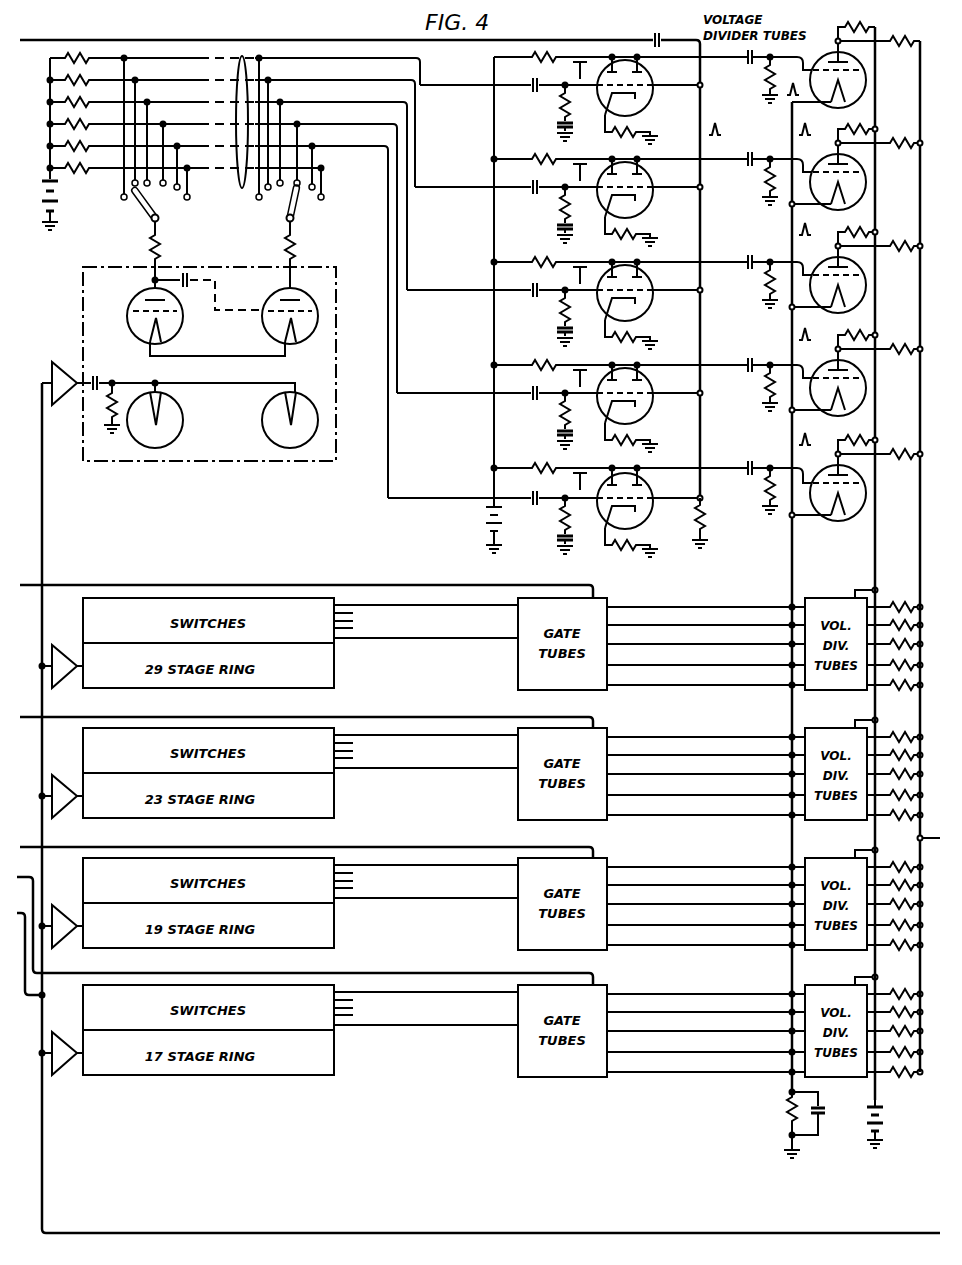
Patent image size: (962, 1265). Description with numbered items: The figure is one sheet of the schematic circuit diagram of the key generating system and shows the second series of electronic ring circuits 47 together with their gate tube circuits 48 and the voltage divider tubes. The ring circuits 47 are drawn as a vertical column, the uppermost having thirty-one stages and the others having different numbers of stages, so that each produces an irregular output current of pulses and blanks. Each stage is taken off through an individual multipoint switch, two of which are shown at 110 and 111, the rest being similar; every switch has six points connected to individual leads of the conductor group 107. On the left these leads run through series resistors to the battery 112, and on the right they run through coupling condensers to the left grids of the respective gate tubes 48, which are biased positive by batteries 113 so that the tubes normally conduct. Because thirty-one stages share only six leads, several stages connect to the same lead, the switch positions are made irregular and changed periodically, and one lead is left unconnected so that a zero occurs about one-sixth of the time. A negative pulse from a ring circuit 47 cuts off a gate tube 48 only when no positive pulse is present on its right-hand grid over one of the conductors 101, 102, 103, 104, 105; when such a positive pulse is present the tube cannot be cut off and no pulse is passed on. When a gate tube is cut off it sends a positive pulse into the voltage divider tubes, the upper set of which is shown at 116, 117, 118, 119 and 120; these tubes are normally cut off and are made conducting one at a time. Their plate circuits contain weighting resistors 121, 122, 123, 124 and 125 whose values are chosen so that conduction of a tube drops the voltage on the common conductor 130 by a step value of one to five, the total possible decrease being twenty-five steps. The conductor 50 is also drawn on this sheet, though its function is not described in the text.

The ring circuits 47 is at (212, 463).
The gate tube circuits 48 is at (751, 315).
The common return line 50 is at (412, 1232).
The conductor 101 is at (588, 40).
The conductor 102 is at (166, 584).
The conductor 103 is at (166, 716).
The conductor 104 is at (166, 846).
The conductor 105 is at (166, 972).
The conductor group 107 is at (230, 131).
The multipoint switch 110 is at (156, 200).
The multipoint switch 111 is at (302, 204).
The battery 112 is at (57, 210).
The battery 113 is at (553, 127).
The voltage divider tube 116 is at (862, 94).
The voltage divider tube 117 is at (862, 197).
The voltage divider tube 118 is at (862, 300).
The voltage divider tube 119 is at (862, 403).
The voltage divider tube 120 is at (858, 513).
The weighting resistor 121 is at (870, 28).
The weighting resistor 122 is at (870, 130).
The weighting resistor 123 is at (870, 233).
The weighting resistor 124 is at (870, 336).
The weighting resistor 125 is at (870, 441).
The common conductor 130 is at (920, 562).